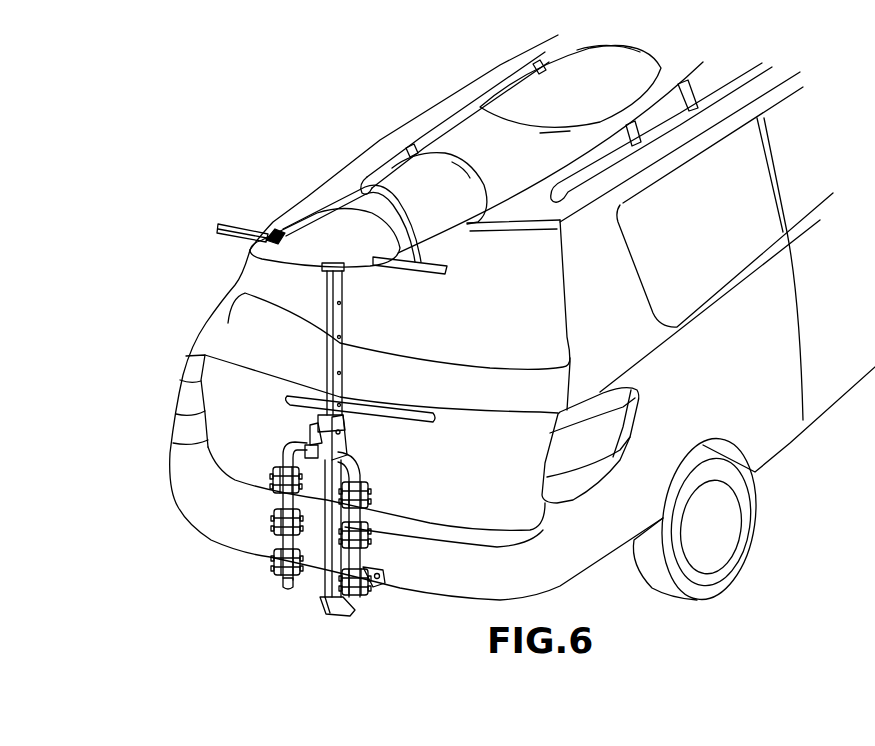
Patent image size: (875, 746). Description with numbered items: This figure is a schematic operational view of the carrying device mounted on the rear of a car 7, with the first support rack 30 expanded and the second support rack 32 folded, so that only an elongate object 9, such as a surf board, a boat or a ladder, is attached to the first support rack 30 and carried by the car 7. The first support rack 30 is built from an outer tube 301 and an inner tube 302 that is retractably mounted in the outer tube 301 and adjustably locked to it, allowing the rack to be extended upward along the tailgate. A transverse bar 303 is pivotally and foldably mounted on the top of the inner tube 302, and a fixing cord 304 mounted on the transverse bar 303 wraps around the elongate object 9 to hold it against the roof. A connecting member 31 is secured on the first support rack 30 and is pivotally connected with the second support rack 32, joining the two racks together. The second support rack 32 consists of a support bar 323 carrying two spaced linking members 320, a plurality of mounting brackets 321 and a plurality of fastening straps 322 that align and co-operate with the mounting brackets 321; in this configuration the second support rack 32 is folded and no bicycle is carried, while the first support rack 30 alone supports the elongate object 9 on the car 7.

The elongate object 9 is at (526, 144).
The car 7 is at (361, 316).
The first support rack 30 is at (266, 426).
The outer tube 301 is at (304, 549).
The inner tube 302 is at (244, 338).
The transverse bar 303 is at (297, 233).
The fixing cord 304 is at (332, 217).
The connecting member 31 is at (238, 519).
The second support rack 32 is at (348, 639).
The linking member 320 is at (216, 435).
The mounting bracket 321 is at (396, 598).
The fastening strap 322 is at (245, 531).
The support bar 323 is at (248, 593).